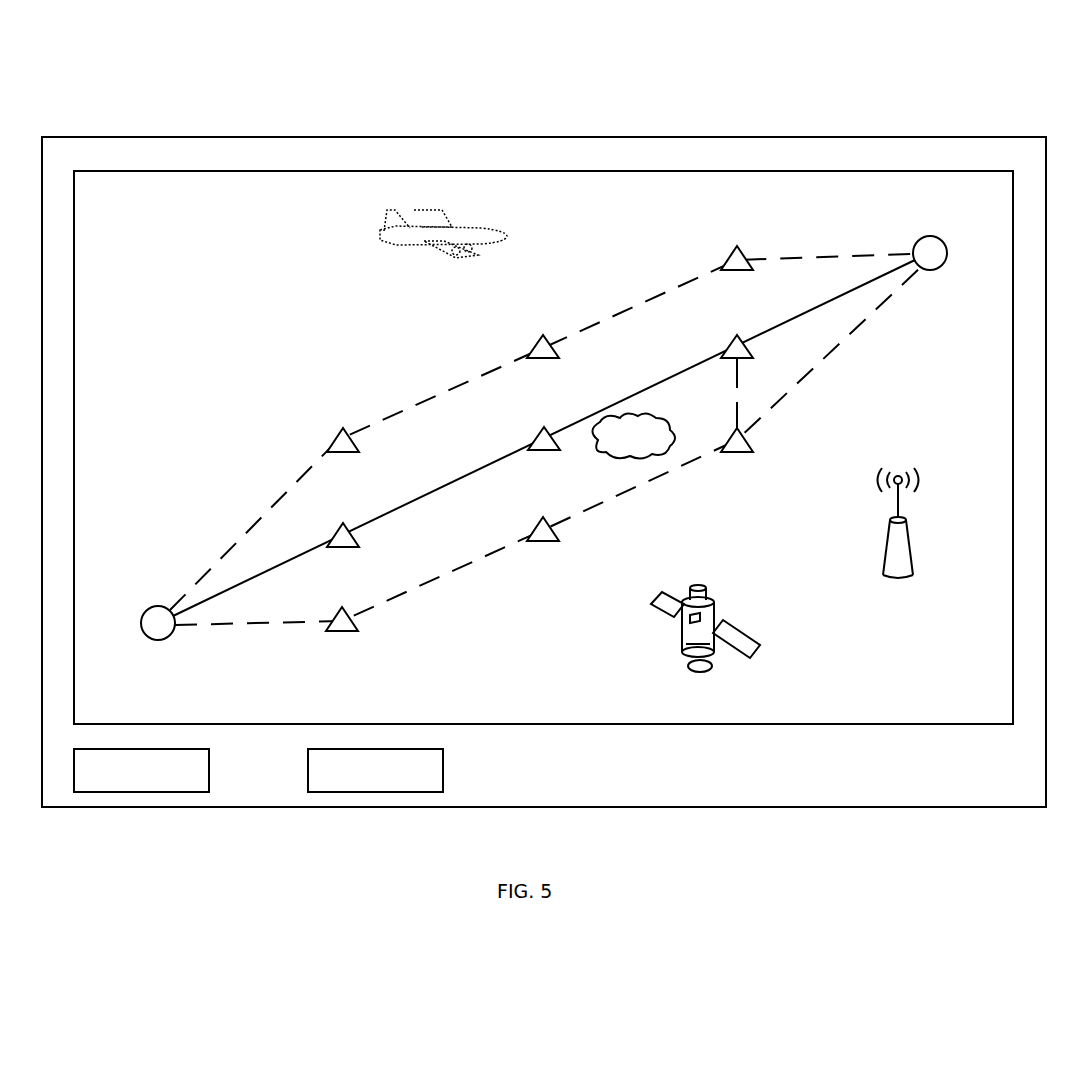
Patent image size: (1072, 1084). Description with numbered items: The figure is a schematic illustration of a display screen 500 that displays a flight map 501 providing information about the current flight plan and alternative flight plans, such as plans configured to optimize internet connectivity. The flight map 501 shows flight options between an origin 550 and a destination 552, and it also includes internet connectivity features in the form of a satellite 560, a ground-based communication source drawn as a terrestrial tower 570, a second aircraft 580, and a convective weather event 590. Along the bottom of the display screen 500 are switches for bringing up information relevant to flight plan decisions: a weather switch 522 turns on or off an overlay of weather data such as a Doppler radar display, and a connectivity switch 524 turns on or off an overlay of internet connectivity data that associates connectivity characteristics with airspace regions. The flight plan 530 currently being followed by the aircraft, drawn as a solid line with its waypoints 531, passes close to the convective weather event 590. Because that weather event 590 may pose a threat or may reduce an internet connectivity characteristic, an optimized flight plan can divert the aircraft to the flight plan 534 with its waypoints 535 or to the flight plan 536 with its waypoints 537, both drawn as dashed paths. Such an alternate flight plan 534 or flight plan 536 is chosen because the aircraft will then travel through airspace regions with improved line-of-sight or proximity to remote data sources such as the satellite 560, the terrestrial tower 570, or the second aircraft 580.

The display screen 500 is at (878, 120).
The flight map 501 is at (996, 712).
The weather switch 522 is at (204, 760).
The connectivity switch 524 is at (438, 760).
The flight plan 530 is at (302, 559).
The waypoints 531 is at (356, 543).
The flight plan 534 is at (282, 621).
The waypoints 535 is at (355, 627).
The flight plan 536 is at (243, 534).
The waypoints 537 is at (356, 448).
The origin 550 is at (148, 608).
The destination 552 is at (941, 240).
The satellite 560 is at (650, 608).
The terrestrial tower 570 is at (908, 562).
The second aircraft 580 is at (379, 226).
The convective weather event 590 is at (598, 463).